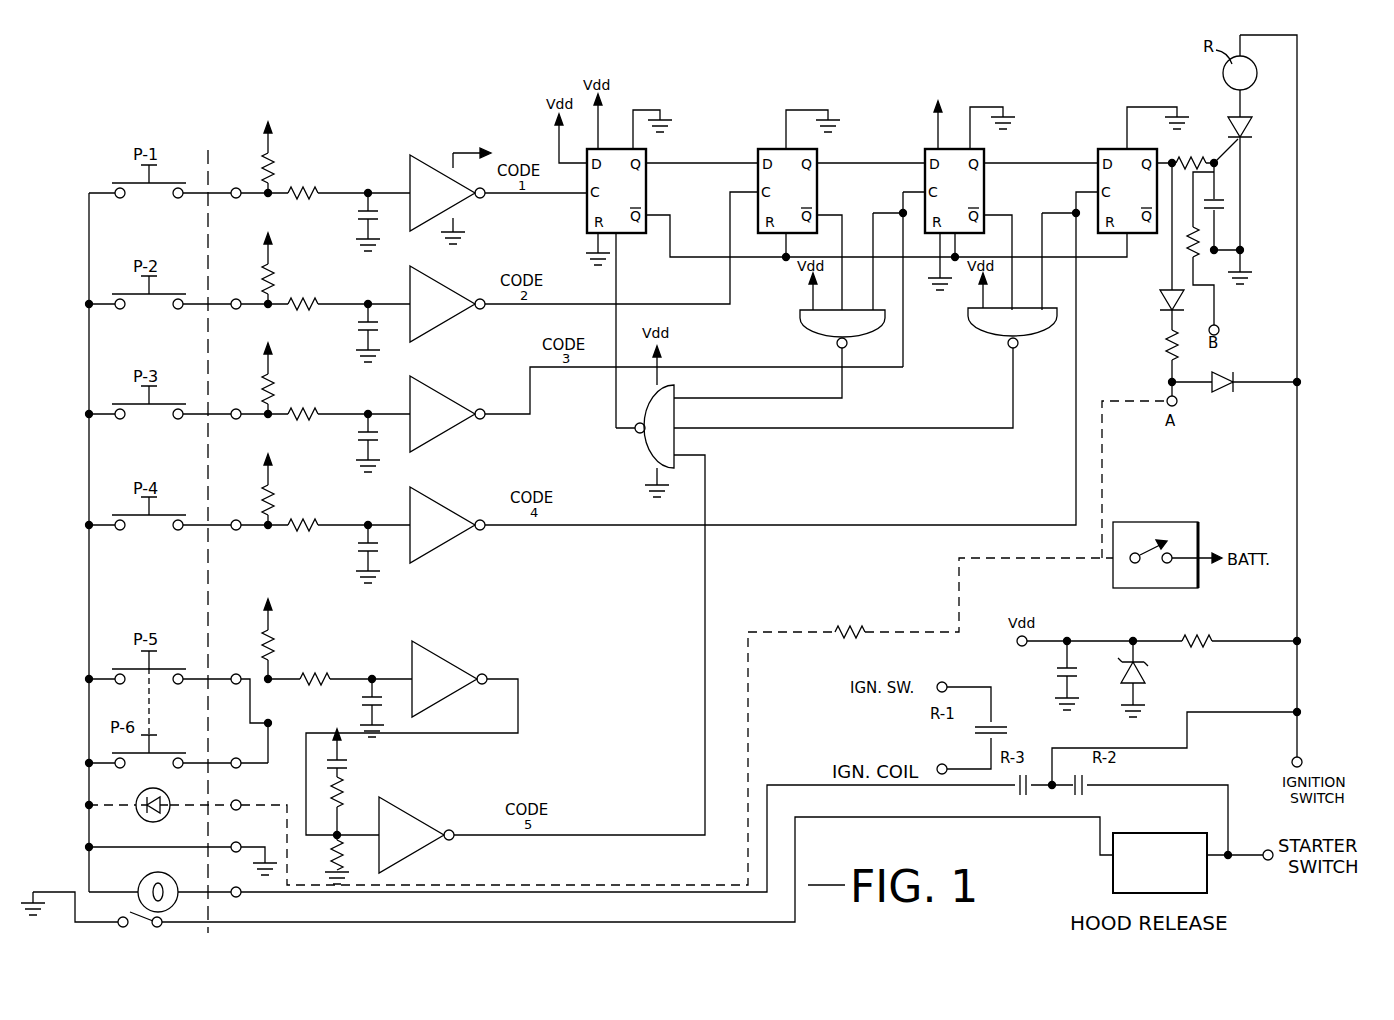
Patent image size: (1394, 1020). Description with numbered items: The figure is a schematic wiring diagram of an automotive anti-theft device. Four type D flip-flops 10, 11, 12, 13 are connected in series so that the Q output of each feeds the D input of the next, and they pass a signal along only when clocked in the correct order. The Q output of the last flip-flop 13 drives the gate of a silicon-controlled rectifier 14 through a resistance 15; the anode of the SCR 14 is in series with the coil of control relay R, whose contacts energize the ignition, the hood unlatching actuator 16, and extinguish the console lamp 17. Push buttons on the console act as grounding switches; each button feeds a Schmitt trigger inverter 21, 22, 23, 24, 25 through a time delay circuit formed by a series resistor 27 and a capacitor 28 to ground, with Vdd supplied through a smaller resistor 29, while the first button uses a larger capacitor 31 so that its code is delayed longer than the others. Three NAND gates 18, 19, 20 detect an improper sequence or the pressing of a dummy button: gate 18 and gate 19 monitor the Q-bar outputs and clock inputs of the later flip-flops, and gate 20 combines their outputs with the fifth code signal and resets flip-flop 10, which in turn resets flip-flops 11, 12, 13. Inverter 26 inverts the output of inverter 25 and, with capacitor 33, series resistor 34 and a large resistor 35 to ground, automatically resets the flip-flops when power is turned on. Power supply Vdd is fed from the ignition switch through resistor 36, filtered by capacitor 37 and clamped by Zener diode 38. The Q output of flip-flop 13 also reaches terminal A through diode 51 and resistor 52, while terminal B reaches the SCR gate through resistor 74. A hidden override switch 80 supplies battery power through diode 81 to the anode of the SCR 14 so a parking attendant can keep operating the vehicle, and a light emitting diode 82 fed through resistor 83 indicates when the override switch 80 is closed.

The type D flip-flop 10 is at (626, 201).
The type D flip-flop 11 is at (797, 201).
The type D flip-flop 12 is at (964, 201).
The type D flip-flop 13 is at (1137, 201).
The silicon-controlled rectifier 14 is at (1246, 140).
The resistance 15 is at (1191, 155).
The hood unlatching actuator 16 is at (1164, 872).
The lamp 17 is at (144, 874).
The NAND gate 18 is at (849, 335).
The NAND gate 19 is at (1020, 334).
The NAND gate 20 is at (668, 436).
The Schmitt trigger inverter 21 is at (438, 202).
The Schmitt trigger inverter 22 is at (438, 313).
The Schmitt trigger inverter 23 is at (438, 423).
The Schmitt trigger inverter 24 is at (438, 534).
The Schmitt trigger inverter 25 is at (440, 688).
The inverter 26 is at (407, 844).
The series resistor 27 is at (301, 186).
The capacitor 28 is at (358, 330).
The resistor 29 is at (263, 158).
The capacitor 31 is at (361, 218).
The capacitor 33 is at (351, 756).
The series resistor 34 is at (347, 790).
The resistor 35 is at (331, 850).
The resistor 36 is at (1198, 630).
The capacitor 37 is at (1056, 666).
The Zener diode 38 is at (1146, 662).
The diode 51 is at (1159, 308).
The resistor 52 is at (1165, 362).
The resistor 74 is at (1204, 242).
The override switch 80 is at (1170, 523).
The diode 81 is at (1238, 374).
The light emitting diode 82 is at (141, 816).
The resistor 83 is at (840, 628).